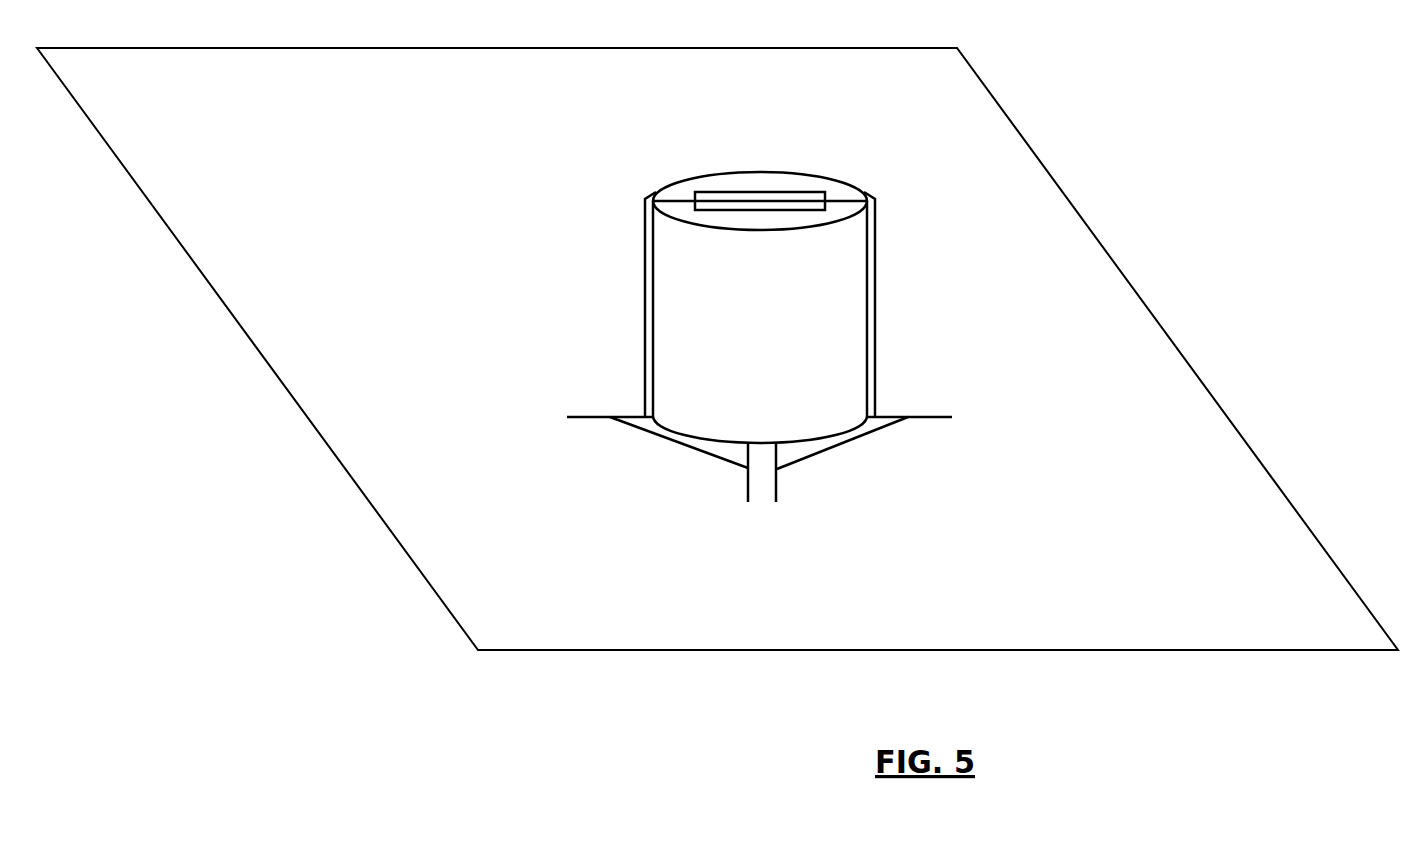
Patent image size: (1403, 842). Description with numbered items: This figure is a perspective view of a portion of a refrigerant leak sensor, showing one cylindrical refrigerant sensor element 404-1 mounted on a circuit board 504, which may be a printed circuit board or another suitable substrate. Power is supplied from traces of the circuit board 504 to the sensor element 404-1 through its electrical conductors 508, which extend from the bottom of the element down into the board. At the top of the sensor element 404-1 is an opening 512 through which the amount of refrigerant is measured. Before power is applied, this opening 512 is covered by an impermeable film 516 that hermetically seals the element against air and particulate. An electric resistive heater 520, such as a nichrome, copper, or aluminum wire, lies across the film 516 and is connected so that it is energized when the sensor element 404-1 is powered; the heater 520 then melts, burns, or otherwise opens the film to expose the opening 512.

The circuit board 504 is at (340, 459).
The refrigerant sensor element 404-1 is at (645, 309).
The impermeable film 516 is at (647, 250).
The opening 512 is at (755, 192).
The electric resistive heater 520 is at (678, 197).
The electrical conductors 508 is at (790, 489).